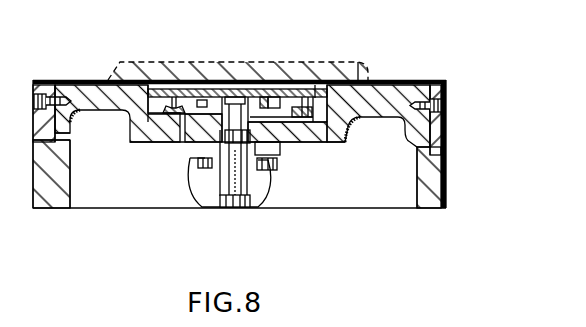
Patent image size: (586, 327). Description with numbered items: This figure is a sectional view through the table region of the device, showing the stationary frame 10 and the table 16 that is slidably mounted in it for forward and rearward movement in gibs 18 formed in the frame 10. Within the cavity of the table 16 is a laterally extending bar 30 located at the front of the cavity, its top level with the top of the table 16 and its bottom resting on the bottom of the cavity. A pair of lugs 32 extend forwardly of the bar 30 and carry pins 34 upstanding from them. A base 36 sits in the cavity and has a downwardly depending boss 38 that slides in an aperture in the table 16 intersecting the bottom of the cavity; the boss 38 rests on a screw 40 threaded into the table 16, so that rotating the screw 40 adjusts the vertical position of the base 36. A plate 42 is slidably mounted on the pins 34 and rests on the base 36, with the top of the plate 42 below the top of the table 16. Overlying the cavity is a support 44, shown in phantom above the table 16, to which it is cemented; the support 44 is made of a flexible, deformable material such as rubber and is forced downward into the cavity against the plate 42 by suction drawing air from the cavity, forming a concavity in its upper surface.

The stationary frame 10 is at (441, 209).
The table 16 is at (402, 98).
The gibs 18 is at (425, 168).
The laterally extending bar 30 is at (311, 125).
The lugs 32 is at (183, 143).
The pins 34 is at (316, 86).
The base 36 is at (227, 107).
The boss 38 is at (202, 143).
The screw 40 is at (257, 185).
The plate 42 is at (285, 92).
The support 44 is at (178, 72).